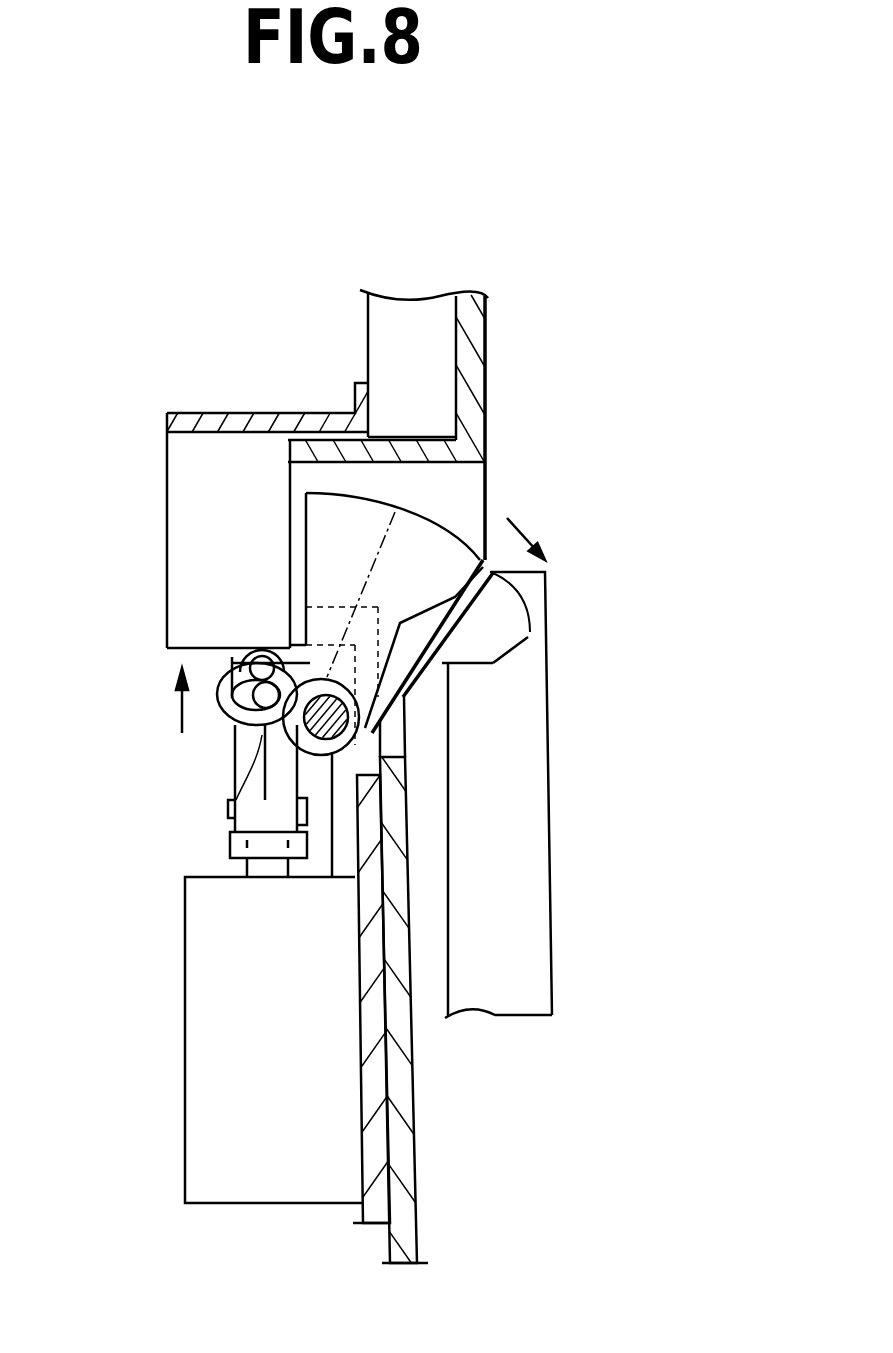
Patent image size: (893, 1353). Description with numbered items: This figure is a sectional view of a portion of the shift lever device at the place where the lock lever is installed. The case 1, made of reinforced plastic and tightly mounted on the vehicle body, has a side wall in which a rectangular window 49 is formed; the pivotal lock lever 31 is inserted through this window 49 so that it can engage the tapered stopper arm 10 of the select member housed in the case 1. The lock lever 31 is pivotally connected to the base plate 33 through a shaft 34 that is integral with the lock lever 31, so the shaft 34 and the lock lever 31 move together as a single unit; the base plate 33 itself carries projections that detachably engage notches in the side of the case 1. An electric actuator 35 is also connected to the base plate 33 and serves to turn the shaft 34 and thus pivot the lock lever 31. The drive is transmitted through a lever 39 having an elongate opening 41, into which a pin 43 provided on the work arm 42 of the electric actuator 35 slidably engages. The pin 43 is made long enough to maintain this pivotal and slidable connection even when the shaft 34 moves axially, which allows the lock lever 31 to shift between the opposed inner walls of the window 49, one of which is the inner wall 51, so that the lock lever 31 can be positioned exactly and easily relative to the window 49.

The case 1 is at (418, 1197).
The stopper arm 10 is at (554, 807).
The lock lever 31 is at (450, 503).
The base plate 33 is at (363, 1092).
The shaft 34 is at (327, 740).
The electric actuator 35 is at (185, 1062).
The lever 39 is at (216, 710).
The elongate opening 41 is at (227, 683).
The work arm 42 is at (233, 778).
The pin 43 is at (233, 802).
The rectangular window 49 is at (290, 463).
The inner wall 51 is at (440, 472).